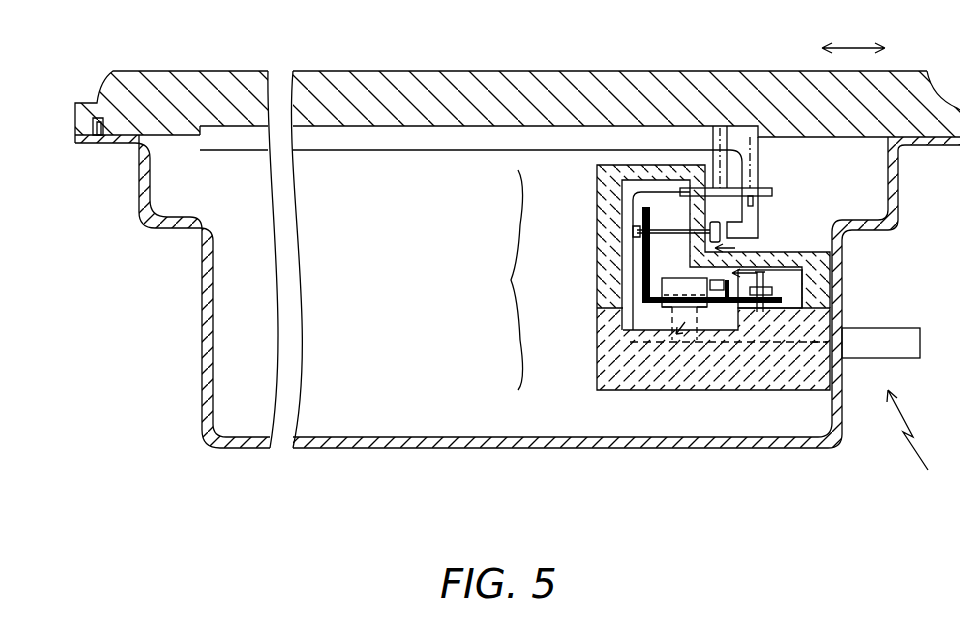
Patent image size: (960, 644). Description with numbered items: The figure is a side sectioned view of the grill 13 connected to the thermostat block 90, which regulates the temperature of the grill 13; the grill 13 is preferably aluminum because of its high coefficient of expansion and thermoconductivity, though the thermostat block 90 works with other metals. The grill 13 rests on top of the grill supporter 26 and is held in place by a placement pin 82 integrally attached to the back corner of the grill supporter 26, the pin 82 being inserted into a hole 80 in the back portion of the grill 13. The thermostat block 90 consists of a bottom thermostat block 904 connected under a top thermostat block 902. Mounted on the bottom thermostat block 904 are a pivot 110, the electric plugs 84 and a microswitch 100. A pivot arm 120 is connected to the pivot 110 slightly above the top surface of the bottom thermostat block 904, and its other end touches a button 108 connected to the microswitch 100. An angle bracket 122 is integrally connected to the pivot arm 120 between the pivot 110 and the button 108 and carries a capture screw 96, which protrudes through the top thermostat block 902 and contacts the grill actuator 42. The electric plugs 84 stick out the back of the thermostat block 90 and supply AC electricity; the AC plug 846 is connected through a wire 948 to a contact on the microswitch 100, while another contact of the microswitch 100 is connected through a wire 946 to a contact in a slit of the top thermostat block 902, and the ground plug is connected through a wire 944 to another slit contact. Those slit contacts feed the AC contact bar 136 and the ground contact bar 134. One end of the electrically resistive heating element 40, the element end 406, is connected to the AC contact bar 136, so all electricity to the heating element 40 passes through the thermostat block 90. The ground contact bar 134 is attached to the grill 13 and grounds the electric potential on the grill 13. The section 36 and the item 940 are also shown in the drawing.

The grill 13 is at (542, 78).
The grill supporter 26 is at (370, 449).
The cover plate section 36 is at (368, 72).
The electrically resistive heating element 40 is at (335, 151).
The grill actuator 42 is at (762, 212).
The hole 80 is at (98, 125).
The placement pin 82 is at (98, 136).
The electric plugs 84 is at (915, 445).
The thermostat block 90 is at (503, 280).
The capture screw 96 is at (633, 232).
The microswitch 100 is at (662, 290).
The button 108 is at (750, 253).
The pivot 110 is at (770, 283).
The pivot arm 120 is at (748, 305).
The angle bracket 122 is at (642, 262).
The ground contact bar 134 is at (765, 157).
The AC contact bar 136 is at (700, 187).
The element end 406 is at (747, 150).
The AC plug 846 is at (893, 328).
The top thermostat block 902 is at (597, 191).
The bottom thermostat block 904 is at (597, 336).
The base plate 940 is at (817, 352).
The wire 944 is at (672, 325).
The wire 946 is at (672, 320).
The wire 948 is at (697, 325).